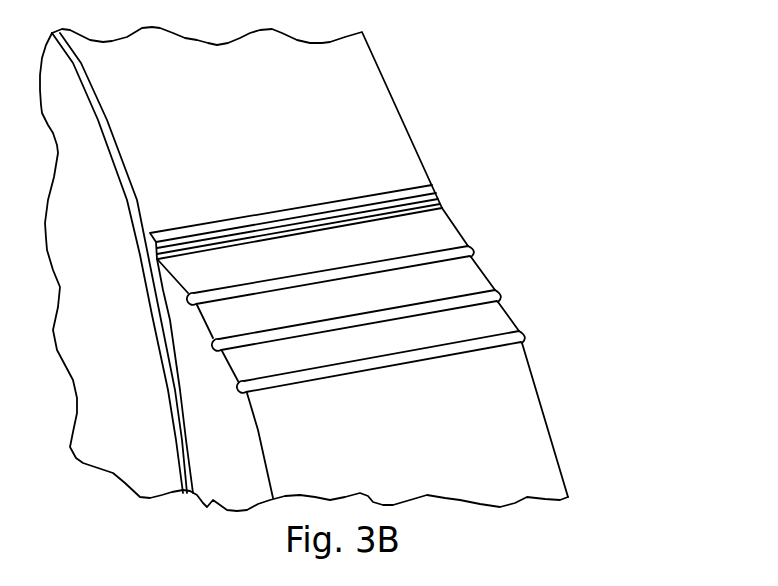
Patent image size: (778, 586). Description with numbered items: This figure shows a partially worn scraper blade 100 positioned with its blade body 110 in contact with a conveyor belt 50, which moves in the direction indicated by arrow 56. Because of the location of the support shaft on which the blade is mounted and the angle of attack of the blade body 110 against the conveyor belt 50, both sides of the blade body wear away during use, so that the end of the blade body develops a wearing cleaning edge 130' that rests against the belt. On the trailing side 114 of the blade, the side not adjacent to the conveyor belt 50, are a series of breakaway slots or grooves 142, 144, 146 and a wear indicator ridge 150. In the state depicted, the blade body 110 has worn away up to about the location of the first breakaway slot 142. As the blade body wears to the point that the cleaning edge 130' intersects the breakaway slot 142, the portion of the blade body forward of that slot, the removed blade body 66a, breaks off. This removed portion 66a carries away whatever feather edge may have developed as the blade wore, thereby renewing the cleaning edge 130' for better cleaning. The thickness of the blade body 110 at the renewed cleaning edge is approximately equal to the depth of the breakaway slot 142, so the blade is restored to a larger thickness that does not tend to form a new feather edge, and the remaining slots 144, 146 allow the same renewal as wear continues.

The scraper blade 100 is at (607, 232).
The conveyor belt 50 is at (386, 81).
The arrow 56 is at (158, 379).
The removed blade body 66a is at (391, 192).
The wearing cleaning edge 130' is at (337, 182).
The first breakaway slot 142 is at (442, 207).
The breakaway slot 144 is at (470, 250).
The breakaway slot 146 is at (497, 298).
The wear indicator ridge 150 is at (522, 338).
The trailing side 114 is at (540, 440).
The blade body 110 is at (247, 450).